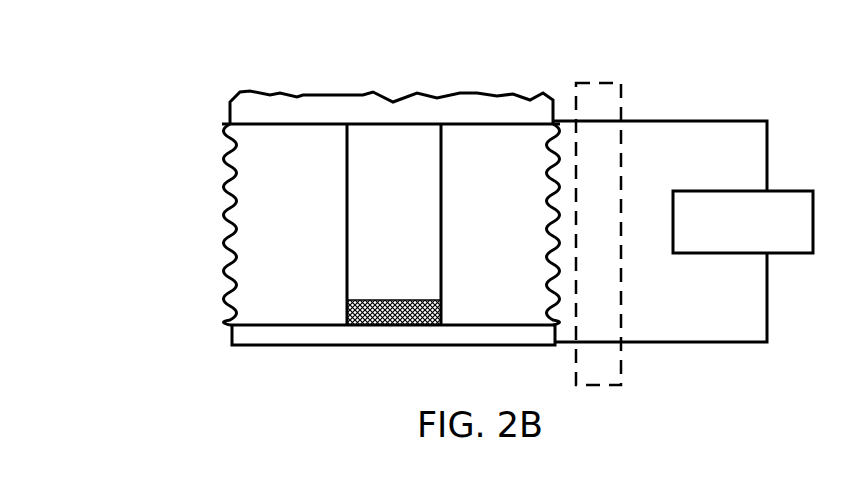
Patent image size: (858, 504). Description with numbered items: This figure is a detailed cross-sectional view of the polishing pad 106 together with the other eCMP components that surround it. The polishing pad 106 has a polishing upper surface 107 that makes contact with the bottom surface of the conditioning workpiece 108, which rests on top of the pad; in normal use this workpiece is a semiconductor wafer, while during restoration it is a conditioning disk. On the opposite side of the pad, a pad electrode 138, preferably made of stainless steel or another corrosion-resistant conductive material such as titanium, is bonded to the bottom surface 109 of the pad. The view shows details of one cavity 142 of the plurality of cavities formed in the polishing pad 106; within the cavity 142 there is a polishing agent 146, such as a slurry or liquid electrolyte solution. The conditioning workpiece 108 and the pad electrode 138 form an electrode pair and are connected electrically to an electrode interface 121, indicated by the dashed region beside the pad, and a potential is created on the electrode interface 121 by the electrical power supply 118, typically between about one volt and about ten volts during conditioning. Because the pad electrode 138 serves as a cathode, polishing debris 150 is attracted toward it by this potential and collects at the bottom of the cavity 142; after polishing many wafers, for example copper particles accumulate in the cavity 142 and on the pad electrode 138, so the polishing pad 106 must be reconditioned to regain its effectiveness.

The polishing pad 106 is at (303, 256).
The polishing upper surface 107 is at (228, 124).
The conditioning workpiece 108 is at (272, 110).
The bottom surface 109 is at (230, 326).
The electrical power supply 118 is at (753, 237).
The electrode interface 121 is at (610, 82).
The pad electrode 138 is at (257, 333).
The cavity 142 is at (443, 183).
The polishing agent 146 is at (412, 206).
The polishing debris 150 is at (430, 300).